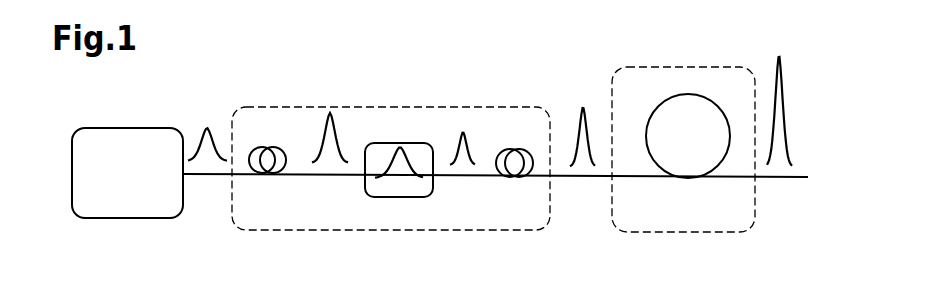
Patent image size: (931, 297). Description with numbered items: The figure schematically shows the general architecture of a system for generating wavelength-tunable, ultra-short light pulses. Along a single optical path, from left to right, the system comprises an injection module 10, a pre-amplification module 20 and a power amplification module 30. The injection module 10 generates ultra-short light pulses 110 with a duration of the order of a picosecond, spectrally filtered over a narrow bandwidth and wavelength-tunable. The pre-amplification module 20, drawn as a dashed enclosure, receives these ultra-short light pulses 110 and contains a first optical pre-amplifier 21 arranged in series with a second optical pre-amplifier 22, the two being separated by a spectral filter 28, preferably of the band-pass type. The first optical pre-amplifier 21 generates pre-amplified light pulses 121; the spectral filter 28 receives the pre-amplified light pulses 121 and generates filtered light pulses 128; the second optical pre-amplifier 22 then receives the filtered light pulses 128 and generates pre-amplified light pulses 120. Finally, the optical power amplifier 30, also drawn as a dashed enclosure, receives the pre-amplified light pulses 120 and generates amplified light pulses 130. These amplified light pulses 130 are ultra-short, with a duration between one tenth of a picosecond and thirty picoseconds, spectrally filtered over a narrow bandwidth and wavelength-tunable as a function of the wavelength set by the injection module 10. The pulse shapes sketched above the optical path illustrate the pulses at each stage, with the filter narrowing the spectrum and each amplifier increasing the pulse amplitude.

The injection module 10 is at (142, 182).
The pre-amplification module 20 is at (298, 230).
The first optical pre-amplifier 21 is at (278, 147).
The second optical pre-amplifier 22 is at (517, 148).
The spectral filter 28 is at (415, 198).
The power amplification module 30 is at (662, 67).
The ultra-short light pulses 110 is at (196, 142).
The pre-amplified light pulses 121 is at (338, 138).
The filtered light pulses 128 is at (469, 144).
The pre-amplified light pulses 120 is at (587, 121).
The amplified light pulses 130 is at (787, 93).